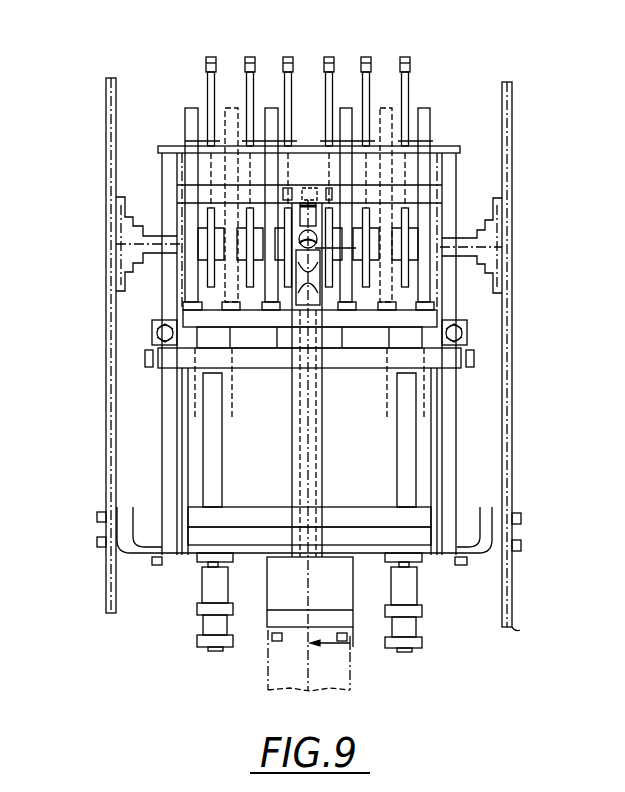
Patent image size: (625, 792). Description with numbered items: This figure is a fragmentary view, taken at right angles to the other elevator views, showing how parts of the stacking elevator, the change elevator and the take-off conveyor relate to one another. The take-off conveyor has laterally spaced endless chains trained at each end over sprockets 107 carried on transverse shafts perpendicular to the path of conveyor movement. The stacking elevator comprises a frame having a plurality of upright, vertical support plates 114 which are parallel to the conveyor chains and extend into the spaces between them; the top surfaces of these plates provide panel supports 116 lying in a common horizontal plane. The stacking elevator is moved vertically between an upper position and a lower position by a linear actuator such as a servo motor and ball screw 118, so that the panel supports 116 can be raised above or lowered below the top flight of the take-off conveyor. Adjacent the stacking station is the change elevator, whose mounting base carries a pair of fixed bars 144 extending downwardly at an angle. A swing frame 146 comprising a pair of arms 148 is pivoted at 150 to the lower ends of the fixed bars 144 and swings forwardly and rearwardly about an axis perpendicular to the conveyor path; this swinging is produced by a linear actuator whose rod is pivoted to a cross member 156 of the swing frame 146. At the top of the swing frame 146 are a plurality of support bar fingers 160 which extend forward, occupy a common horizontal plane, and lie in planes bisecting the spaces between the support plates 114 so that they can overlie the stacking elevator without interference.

The sprockets 107 is at (207, 277).
The support plates 114 is at (178, 168).
The panel supports 116 is at (190, 107).
The ball screw 118 is at (277, 600).
The fixed bars 144 is at (168, 436).
The swing frame 146 is at (152, 311).
The arms 148 is at (167, 187).
The pivot 150 is at (172, 541).
The cross member 156 is at (253, 186).
The support bar fingers 160 is at (287, 56).